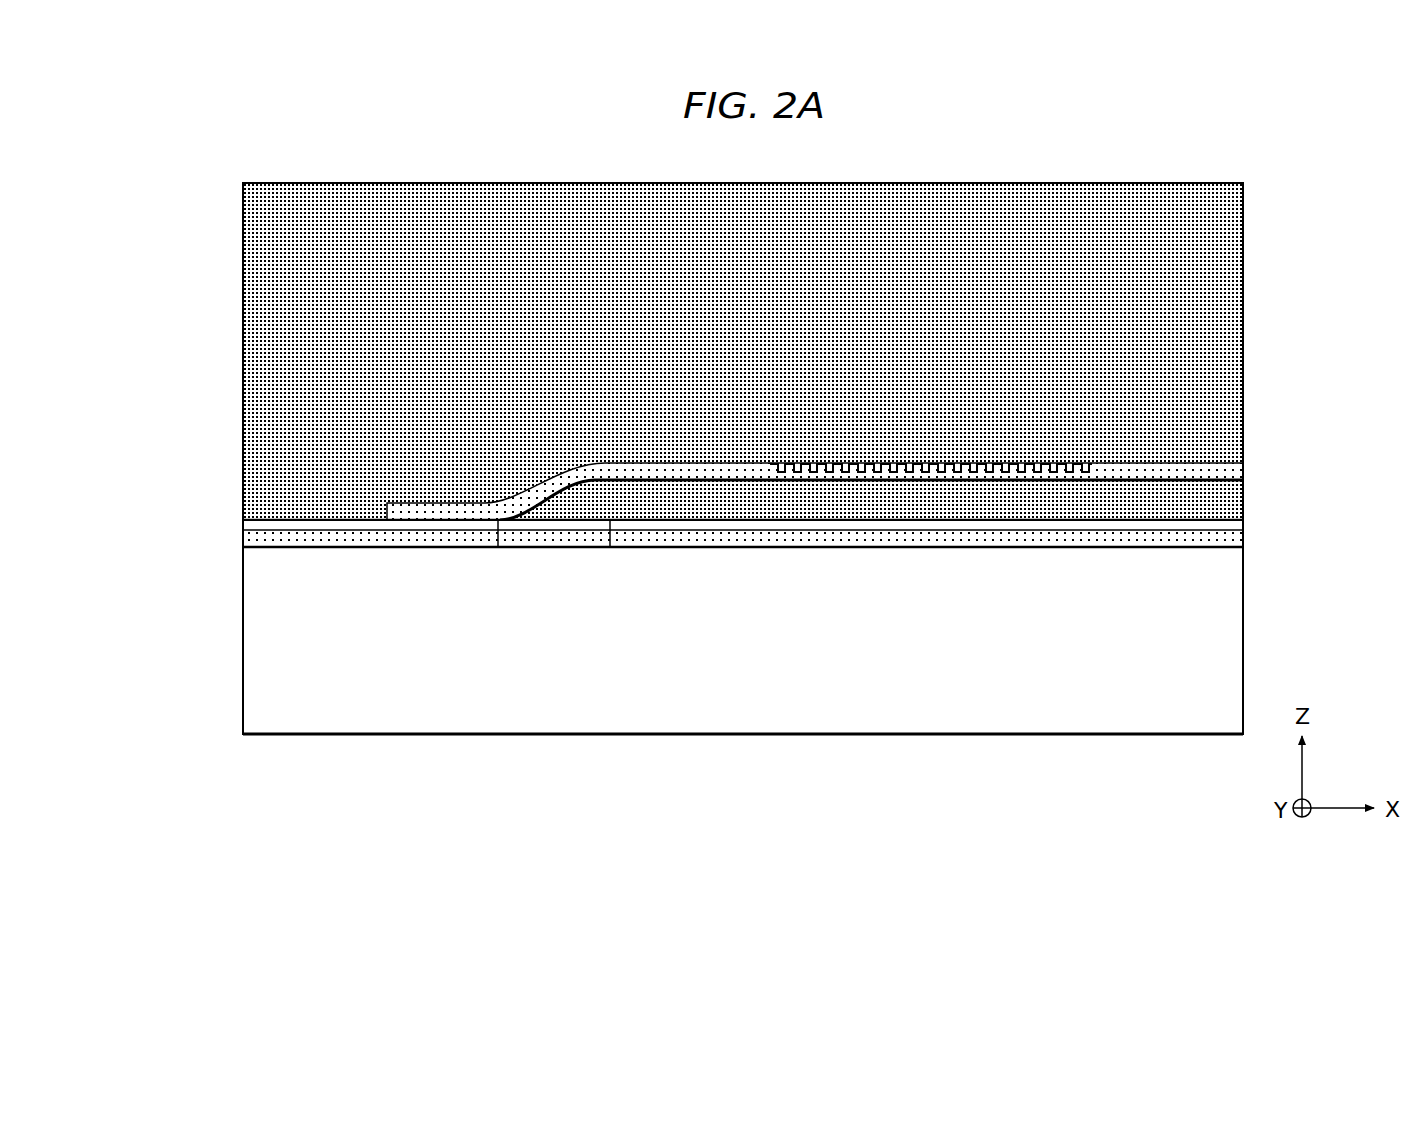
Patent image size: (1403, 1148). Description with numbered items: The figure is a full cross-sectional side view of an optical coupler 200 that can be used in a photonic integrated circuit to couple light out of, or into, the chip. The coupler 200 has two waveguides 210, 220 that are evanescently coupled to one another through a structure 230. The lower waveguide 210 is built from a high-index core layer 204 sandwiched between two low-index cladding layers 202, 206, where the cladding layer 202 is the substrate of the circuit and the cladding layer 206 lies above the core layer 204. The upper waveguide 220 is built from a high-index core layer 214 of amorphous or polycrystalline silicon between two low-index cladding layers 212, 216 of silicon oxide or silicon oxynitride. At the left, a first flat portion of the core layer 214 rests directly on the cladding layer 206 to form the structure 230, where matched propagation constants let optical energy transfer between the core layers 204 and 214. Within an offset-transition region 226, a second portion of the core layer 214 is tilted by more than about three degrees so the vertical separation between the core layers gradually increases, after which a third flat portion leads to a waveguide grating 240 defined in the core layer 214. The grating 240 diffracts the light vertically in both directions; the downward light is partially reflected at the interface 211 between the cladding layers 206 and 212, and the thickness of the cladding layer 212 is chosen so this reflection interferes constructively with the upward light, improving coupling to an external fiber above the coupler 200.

The optical coupler 200 is at (768, 153).
The cladding layer 202 is at (253, 664).
The core layer 204 is at (295, 546).
The cladding layer 206 is at (683, 527).
The waveguide 210 is at (716, 557).
The interface 211 is at (936, 524).
The cladding layer 212 is at (1230, 503).
The core layer 214 is at (846, 449).
The cladding layer 216 is at (1228, 246).
The waveguide 220 is at (552, 446).
The offset-transition region 226 is at (610, 548).
The structure 230 is at (498, 548).
The waveguide grating 240 is at (937, 445).